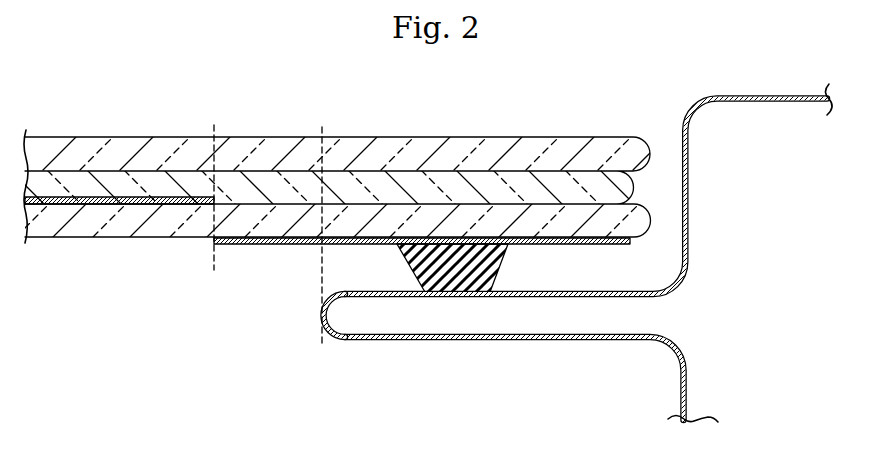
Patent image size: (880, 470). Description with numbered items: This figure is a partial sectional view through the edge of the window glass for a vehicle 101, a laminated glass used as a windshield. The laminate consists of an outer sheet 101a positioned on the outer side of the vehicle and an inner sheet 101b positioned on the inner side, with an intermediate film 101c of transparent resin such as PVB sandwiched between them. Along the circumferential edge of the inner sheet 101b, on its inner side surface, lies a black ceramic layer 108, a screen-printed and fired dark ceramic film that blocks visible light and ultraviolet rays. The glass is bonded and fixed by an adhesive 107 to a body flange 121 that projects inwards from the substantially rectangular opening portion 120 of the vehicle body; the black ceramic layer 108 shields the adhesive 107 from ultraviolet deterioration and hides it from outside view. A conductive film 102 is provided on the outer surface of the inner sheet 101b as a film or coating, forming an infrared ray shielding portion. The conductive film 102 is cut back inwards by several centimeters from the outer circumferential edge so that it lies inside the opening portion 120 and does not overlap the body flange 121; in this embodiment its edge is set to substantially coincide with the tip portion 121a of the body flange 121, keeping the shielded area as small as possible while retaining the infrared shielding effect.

The window glass for a vehicle 101 is at (437, 138).
The outer sheet 101a is at (540, 150).
The inner sheet 101b is at (185, 238).
The intermediate film 101c is at (192, 185).
The conductive film 102 is at (88, 205).
The adhesive 107 is at (455, 270).
The black ceramic layer 108 is at (613, 246).
The opening portion 120 is at (681, 168).
The body flange 121 is at (568, 342).
The tip portion of the body flange 121a is at (314, 316).